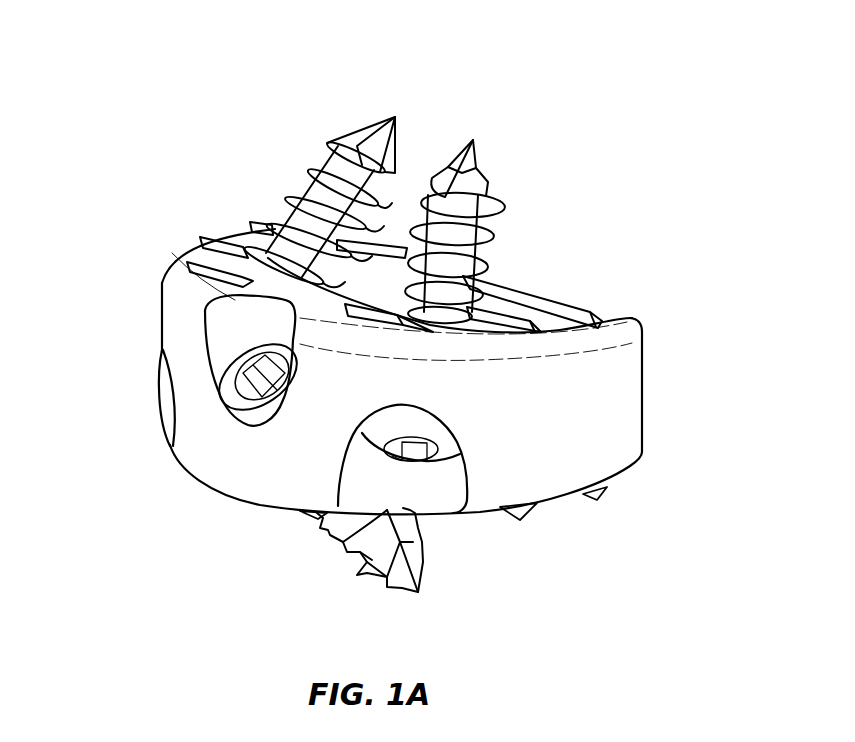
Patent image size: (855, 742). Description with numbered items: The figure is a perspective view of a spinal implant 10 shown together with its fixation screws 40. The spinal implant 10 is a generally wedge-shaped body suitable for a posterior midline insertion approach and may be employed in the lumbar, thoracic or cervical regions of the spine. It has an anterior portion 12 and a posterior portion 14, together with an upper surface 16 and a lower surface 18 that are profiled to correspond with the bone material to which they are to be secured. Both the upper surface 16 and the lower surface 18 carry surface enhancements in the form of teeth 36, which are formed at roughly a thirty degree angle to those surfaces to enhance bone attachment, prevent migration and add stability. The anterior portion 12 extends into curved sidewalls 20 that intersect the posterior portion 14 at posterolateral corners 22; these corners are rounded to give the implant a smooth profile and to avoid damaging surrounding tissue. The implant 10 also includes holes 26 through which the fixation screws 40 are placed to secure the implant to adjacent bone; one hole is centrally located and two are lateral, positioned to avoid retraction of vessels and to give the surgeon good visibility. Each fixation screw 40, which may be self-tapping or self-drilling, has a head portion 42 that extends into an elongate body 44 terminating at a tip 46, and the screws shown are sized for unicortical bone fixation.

The spinal implant 10 is at (550, 125).
The anterior portion 12 is at (203, 422).
The posterior portion 14 is at (553, 290).
The upper surface 16 is at (222, 240).
The lower surface 18 is at (563, 500).
The curved sidewalls 20 is at (600, 430).
The posterolateral corners 22 is at (642, 392).
The holes 26 is at (433, 488).
The teeth 36 is at (597, 310).
The fixation screw 40 is at (298, 118).
The head portion 42 is at (257, 413).
The elongate body 44 is at (483, 217).
The tip 46 is at (398, 117).